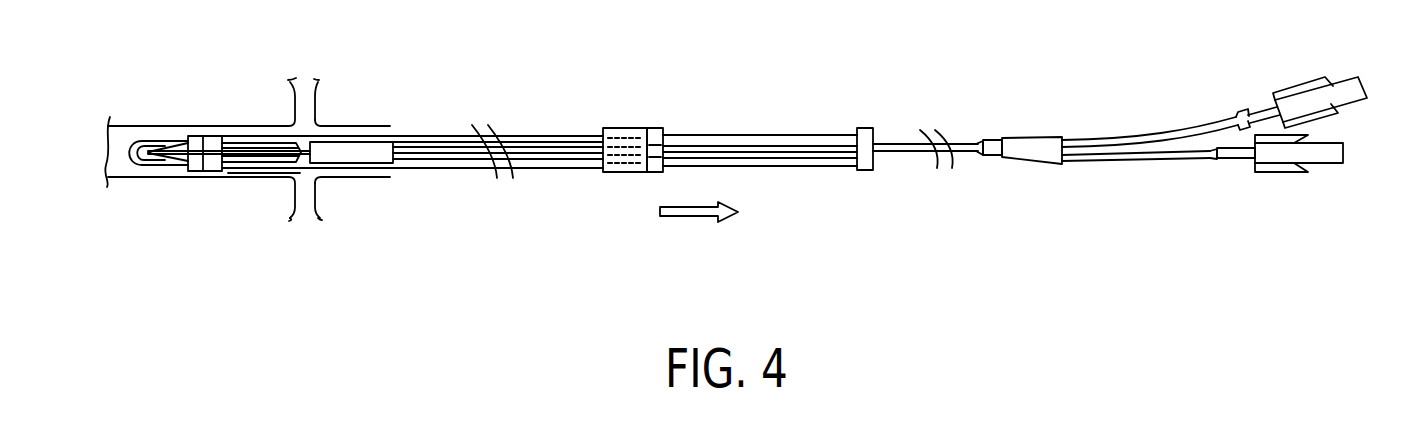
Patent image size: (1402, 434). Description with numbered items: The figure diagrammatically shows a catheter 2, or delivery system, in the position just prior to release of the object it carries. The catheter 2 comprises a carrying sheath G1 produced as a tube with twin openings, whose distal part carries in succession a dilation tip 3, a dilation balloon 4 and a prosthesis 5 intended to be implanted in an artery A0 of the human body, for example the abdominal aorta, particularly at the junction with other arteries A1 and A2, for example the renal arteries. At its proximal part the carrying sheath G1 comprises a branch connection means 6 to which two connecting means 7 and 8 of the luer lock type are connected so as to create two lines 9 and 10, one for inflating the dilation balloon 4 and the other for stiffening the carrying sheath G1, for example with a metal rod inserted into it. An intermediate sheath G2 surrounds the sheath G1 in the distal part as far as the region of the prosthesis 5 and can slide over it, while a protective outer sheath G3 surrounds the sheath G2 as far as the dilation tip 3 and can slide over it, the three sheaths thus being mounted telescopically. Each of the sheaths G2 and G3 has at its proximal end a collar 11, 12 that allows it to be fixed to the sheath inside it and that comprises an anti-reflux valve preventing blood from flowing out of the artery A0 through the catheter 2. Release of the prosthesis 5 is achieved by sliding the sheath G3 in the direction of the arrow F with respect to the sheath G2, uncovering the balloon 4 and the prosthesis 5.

The catheter 2 is at (710, 106).
The dilation tip 3 is at (155, 168).
The dilation balloon 4 is at (238, 166).
The prosthesis 5 is at (378, 158).
The branch connection means 6 is at (1033, 137).
The connecting means 7 is at (1353, 104).
The connecting means 8 is at (1330, 166).
The line 9 is at (1203, 128).
The line 10 is at (1195, 161).
The collar 11 is at (863, 127).
The collar 12 is at (623, 173).
The artery A0 is at (161, 123).
The artery A1 is at (314, 91).
The artery A2 is at (297, 213).
The carrying sheath G1 is at (958, 153).
The intermediate sheath G2 is at (800, 132).
The protective outer sheath G3 is at (557, 133).
The arrow F is at (689, 217).